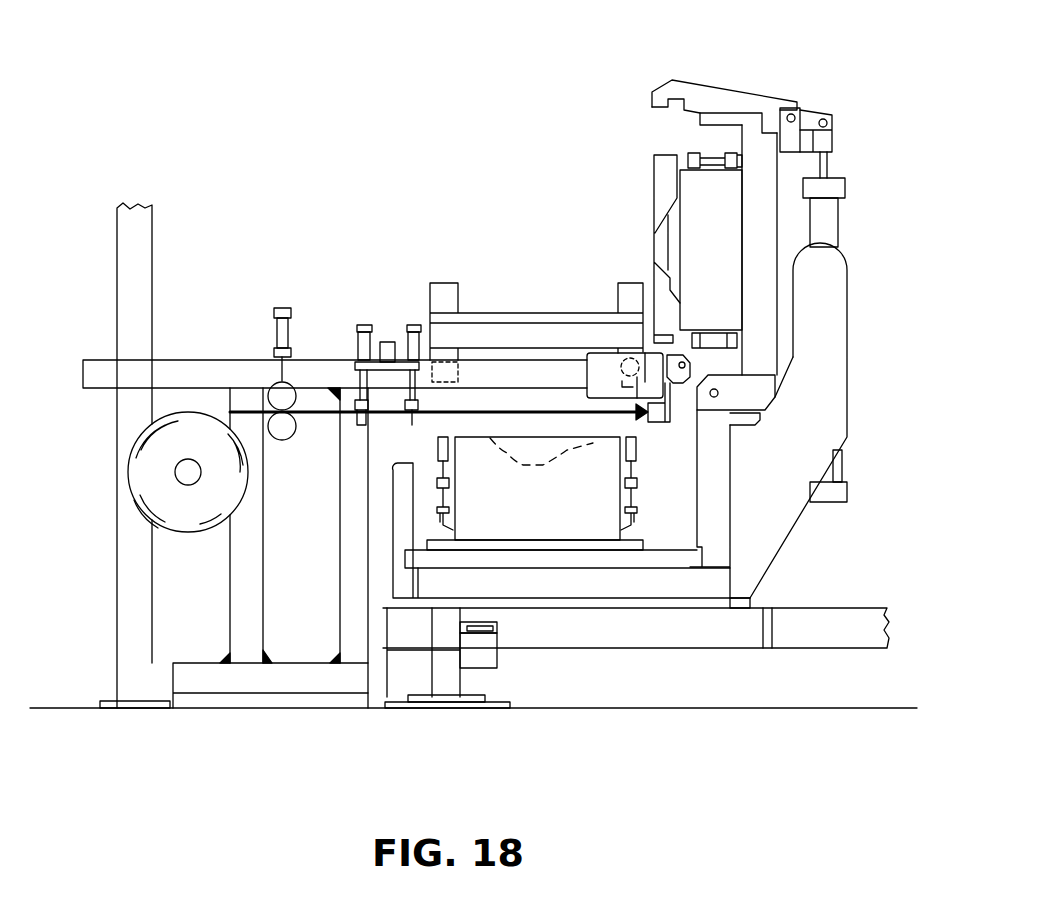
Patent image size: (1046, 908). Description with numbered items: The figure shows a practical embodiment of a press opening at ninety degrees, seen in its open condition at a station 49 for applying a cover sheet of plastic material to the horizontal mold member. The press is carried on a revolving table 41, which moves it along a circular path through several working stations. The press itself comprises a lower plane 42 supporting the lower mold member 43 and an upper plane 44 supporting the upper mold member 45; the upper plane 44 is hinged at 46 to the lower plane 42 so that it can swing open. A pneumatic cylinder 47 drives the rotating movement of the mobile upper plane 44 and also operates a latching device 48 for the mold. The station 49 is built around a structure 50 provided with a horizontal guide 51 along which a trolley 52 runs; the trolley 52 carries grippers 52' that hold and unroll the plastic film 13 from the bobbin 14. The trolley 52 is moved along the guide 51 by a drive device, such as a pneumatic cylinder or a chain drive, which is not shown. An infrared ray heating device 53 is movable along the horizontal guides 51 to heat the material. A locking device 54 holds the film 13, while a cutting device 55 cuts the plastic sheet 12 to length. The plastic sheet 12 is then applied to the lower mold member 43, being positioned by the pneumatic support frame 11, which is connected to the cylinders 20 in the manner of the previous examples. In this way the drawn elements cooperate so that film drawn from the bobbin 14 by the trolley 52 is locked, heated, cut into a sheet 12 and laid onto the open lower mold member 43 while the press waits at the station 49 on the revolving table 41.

The pneumatic support frame 11 is at (660, 157).
The plastic sheet 12 is at (532, 410).
The plastic film 13 is at (322, 415).
The bobbin 14 is at (148, 470).
The cylinders 20 is at (712, 148).
The revolving table 41 is at (695, 630).
The lower plane 42 is at (600, 583).
The mold member 43 is at (507, 523).
The upper plane 44 is at (795, 178).
The mold member 45 is at (696, 190).
The hinge 46 is at (720, 387).
The pneumatic cylinder 47 is at (827, 222).
The latching device 48 is at (722, 95).
The station 49 is at (245, 219).
The structure 50 is at (135, 590).
The horizontal guide 51 is at (213, 370).
The trolley 52 is at (635, 321).
The grippers 52' is at (673, 430).
The infrared ray heating device 53 is at (493, 337).
The locking device 54 is at (358, 342).
The cutting device 55 is at (407, 342).